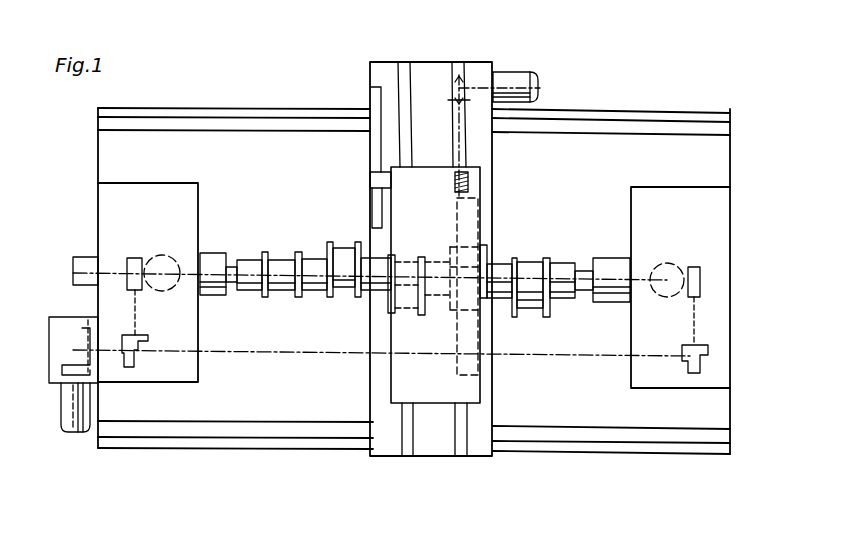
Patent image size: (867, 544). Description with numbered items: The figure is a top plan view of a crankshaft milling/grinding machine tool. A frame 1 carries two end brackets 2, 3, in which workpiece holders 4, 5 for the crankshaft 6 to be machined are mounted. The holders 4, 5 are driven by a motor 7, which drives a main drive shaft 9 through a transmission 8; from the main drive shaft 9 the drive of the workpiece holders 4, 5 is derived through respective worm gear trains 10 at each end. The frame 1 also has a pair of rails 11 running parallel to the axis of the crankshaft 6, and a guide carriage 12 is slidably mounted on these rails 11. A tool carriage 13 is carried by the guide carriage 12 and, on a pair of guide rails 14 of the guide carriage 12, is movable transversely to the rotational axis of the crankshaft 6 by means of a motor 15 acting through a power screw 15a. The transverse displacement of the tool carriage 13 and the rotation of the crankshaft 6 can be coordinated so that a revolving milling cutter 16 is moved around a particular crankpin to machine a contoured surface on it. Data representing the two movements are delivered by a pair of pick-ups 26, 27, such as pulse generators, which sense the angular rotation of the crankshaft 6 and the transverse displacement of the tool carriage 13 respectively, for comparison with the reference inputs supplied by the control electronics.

The frame 1 is at (668, 414).
The end bracket 2 is at (116, 196).
The end bracket 3 is at (636, 227).
The workpiece holder 4 is at (213, 283).
The workpiece holder 5 is at (612, 294).
The crankshaft 6 is at (303, 279).
The motor 7 is at (73, 431).
The transmission 8 is at (76, 325).
The main drive shaft 9 is at (273, 354).
The worm gear train 10 is at (145, 258).
The rails 11 is at (261, 124).
The guide carriage 12 is at (432, 441).
The tool carriage 13 is at (408, 372).
The guide rails 14 is at (405, 104).
The motor 15 is at (538, 85).
The power screw 15a is at (470, 182).
The revolving milling cutter 16 is at (470, 363).
The pick-up 26 is at (88, 266).
The pick-up 27 is at (377, 180).